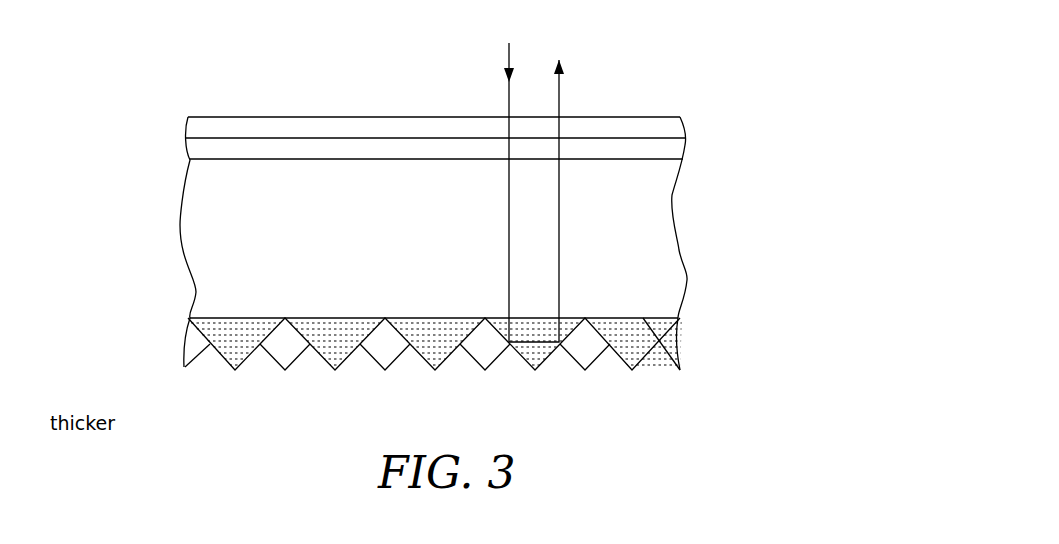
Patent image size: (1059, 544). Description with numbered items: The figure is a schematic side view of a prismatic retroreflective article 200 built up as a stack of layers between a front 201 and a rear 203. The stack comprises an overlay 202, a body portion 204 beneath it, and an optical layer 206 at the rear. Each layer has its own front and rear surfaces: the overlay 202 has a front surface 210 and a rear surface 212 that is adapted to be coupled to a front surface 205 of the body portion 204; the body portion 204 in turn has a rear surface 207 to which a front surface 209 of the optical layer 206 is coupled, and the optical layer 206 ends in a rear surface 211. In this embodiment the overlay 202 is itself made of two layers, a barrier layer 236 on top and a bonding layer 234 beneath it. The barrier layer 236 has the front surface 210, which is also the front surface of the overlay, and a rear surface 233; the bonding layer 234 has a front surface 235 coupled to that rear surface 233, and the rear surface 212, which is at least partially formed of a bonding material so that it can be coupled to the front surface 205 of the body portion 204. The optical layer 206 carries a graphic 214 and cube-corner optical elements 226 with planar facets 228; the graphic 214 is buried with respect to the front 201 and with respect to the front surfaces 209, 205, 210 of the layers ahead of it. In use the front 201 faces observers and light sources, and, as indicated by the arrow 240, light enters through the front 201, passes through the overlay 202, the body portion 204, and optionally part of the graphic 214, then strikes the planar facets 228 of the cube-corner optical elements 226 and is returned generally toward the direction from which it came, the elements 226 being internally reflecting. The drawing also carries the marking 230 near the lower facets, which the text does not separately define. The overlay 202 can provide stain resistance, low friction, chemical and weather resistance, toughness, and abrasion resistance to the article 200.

The retroreflective article 200 is at (656, 53).
The front 201 is at (205, 94).
The overlay 202 is at (173, 104).
The rear 203 is at (210, 375).
The body portion 204 is at (172, 243).
The front surface of the body portion 205 is at (634, 158).
The optical layer 206 is at (167, 347).
The rear surface of the body portion 207 is at (658, 342).
The front surface of the optical layer 209 is at (656, 318).
The front surface of the overlay 210 is at (248, 117).
The rear surface of the optical layer 211 is at (632, 372).
The rear surface of the overlay 212 is at (227, 160).
The graphic 214 is at (598, 375).
The cube-corner optical elements 226 is at (332, 376).
The planar facets 228 is at (431, 370).
The third pair of apexes 230 is at (533, 371).
The rear surface of the barrier layer 233 is at (304, 135).
The bonding layer 234 is at (676, 152).
The front surface of the bonding layer 235 is at (335, 140).
The barrier layer 236 is at (677, 125).
The arrow 240 is at (509, 52).